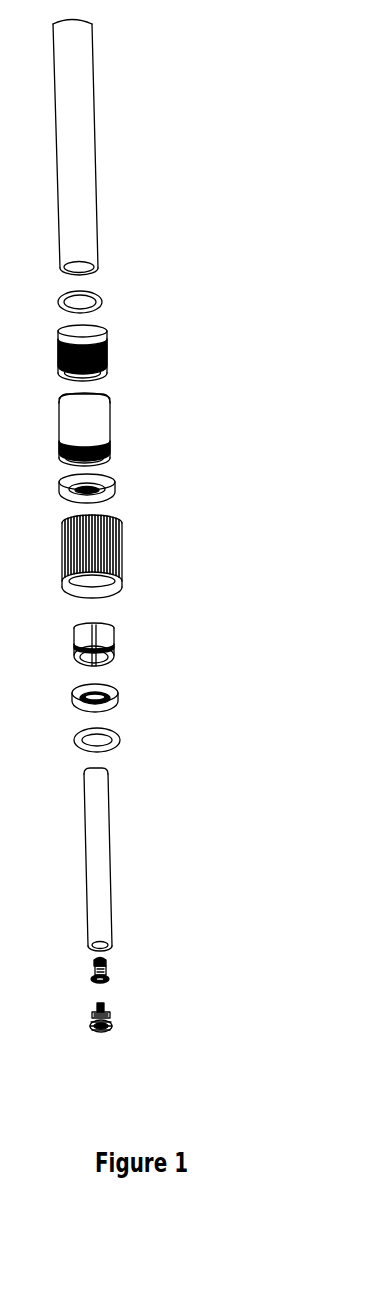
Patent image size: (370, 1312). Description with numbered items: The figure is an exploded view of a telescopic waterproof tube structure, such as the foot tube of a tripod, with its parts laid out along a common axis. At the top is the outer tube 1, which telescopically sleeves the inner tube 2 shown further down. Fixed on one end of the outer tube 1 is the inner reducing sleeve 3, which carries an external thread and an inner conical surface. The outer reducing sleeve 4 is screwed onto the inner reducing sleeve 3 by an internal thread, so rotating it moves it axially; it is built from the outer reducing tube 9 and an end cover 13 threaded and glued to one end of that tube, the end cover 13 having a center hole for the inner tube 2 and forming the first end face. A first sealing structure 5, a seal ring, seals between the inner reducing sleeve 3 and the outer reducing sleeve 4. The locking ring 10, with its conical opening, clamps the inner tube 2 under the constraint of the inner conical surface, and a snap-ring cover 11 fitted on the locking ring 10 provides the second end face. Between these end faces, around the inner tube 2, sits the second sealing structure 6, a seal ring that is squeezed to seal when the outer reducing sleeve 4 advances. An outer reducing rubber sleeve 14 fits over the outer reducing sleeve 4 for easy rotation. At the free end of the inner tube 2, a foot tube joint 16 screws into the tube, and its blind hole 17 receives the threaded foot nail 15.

The outer tube 1 is at (90, 228).
The inner tube 2 is at (107, 868).
The inner reducing sleeve 3 is at (107, 336).
The outer reducing sleeve 4 is at (164, 456).
The first sealing structure 5 is at (103, 299).
The second sealing structure 6 is at (120, 741).
The outer reducing tube 9 is at (93, 428).
The locking ring 10 is at (114, 645).
The cover 11 is at (118, 700).
The end cover 13 is at (135, 497).
The outer reducing rubber sleeve 14 is at (122, 553).
The foot nail 15 is at (112, 1015).
The foot tube joint 16 is at (108, 968).
The blind hole 17 is at (108, 980).